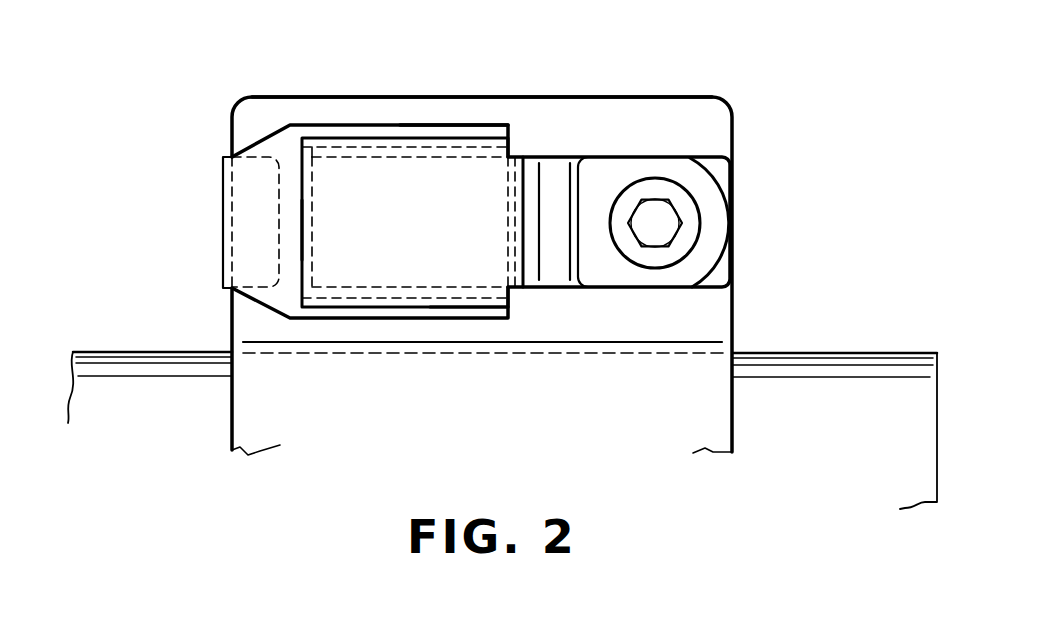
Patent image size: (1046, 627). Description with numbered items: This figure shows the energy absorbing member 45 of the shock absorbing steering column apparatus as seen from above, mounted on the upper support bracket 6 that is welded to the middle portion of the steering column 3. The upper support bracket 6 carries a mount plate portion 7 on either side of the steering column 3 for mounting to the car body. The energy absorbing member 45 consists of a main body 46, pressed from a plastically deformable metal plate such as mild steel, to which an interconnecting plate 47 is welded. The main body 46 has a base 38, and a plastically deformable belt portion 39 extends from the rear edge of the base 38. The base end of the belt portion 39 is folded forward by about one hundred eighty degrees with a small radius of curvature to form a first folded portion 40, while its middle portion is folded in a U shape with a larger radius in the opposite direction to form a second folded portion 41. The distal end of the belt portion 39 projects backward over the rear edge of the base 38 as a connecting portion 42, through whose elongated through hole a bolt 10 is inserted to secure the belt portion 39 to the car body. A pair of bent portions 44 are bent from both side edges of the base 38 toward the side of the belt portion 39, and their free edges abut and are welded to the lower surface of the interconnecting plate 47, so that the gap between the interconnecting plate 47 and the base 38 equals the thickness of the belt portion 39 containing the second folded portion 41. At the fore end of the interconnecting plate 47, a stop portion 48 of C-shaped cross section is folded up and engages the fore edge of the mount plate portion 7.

The steering column 3 is at (872, 360).
The upper support bracket 6 is at (717, 322).
The mount plate portion 7 is at (652, 125).
The bolt 10 is at (663, 222).
The base 38 is at (353, 267).
The belt portion 39 is at (553, 172).
The first folded portion 40 is at (525, 253).
The second folded portion 41 is at (232, 237).
The connecting portion 42 is at (718, 237).
The bent portion 44 is at (368, 138).
The energy absorbing member 45 is at (444, 118).
The main body 46 is at (472, 272).
The interconnecting plate 47 is at (288, 140).
The stop portion 48 is at (220, 195).